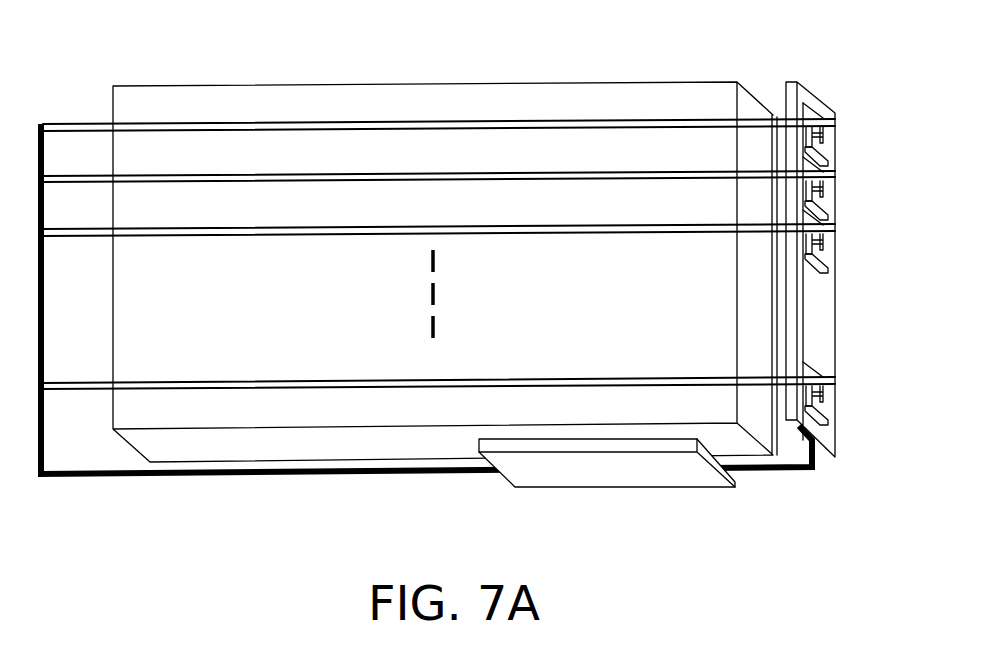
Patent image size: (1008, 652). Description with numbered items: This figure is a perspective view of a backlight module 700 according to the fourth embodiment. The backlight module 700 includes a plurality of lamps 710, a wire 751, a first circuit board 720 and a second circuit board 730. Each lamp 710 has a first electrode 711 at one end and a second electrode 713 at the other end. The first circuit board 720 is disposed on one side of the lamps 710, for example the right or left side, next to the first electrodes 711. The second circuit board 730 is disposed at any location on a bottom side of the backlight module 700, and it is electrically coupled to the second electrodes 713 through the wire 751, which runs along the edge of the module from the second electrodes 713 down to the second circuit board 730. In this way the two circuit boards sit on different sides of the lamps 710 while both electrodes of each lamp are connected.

The backlight module 700 is at (778, 508).
The lamp 710 is at (594, 123).
The first electrode 711 is at (827, 117).
The second electrode 713 is at (67, 128).
The first circuit board 720 is at (805, 80).
The second circuit board 730 is at (658, 477).
The wire 751 is at (132, 477).